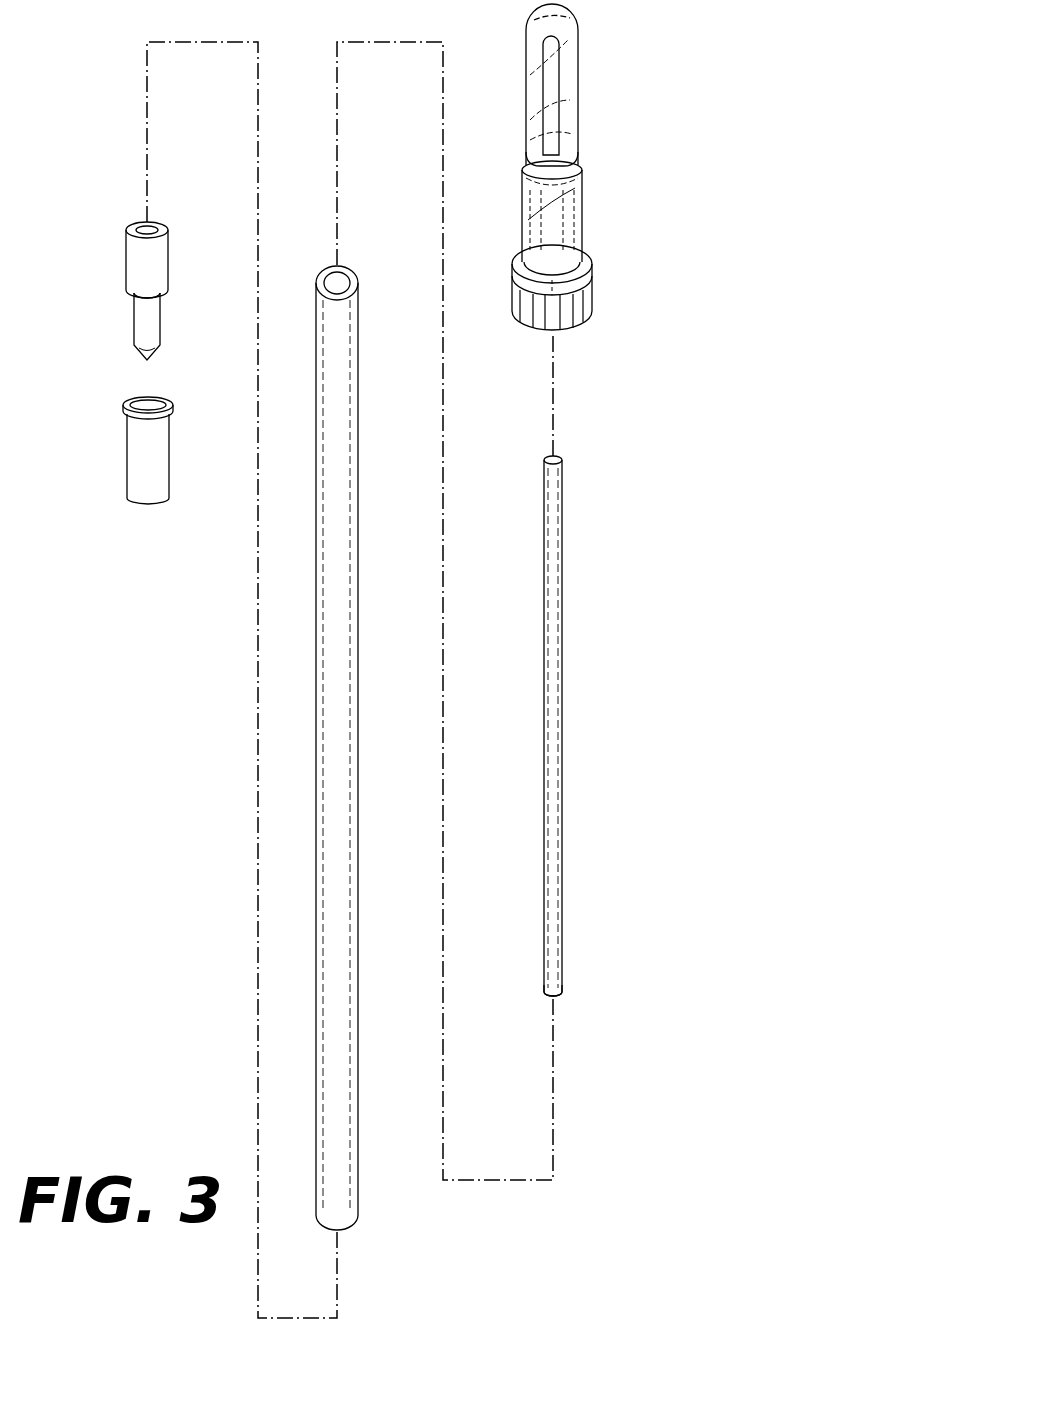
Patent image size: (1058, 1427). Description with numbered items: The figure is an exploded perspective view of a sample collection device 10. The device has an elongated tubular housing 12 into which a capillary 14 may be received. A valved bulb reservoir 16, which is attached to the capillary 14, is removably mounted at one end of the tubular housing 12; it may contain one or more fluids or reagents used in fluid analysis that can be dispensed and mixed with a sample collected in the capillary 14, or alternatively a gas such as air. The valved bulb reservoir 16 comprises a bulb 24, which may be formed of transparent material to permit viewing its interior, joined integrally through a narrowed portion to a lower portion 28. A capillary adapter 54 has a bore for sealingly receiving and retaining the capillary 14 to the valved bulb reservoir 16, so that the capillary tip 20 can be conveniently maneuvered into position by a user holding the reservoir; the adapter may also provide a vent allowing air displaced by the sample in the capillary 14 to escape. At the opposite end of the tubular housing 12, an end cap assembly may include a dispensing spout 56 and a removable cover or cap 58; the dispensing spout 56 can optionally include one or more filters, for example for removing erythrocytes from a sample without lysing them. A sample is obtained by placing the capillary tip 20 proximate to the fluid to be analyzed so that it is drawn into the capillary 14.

The sample collection device 10 is at (849, 73).
The elongated tubular housing 12 is at (358, 492).
The capillary 14 is at (562, 540).
The valved bulb reservoir 16 is at (604, 39).
The capillary tip 20 is at (562, 995).
The bulb 24 is at (568, 113).
The lower portion 28 is at (582, 213).
The capillary adapter 54 is at (576, 315).
The dispensing spout 56 is at (126, 262).
The removable cover or cap 58 is at (127, 458).